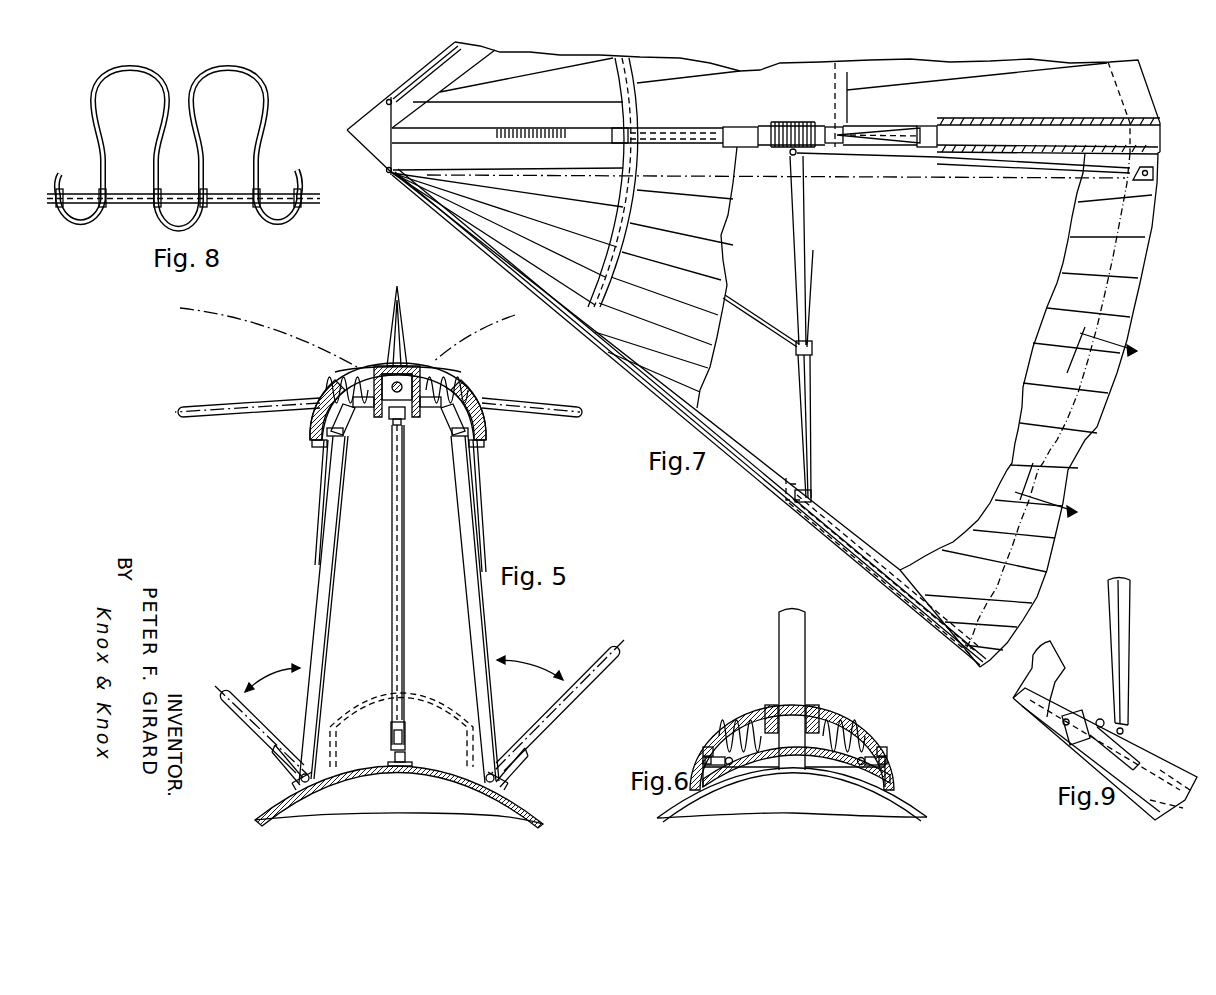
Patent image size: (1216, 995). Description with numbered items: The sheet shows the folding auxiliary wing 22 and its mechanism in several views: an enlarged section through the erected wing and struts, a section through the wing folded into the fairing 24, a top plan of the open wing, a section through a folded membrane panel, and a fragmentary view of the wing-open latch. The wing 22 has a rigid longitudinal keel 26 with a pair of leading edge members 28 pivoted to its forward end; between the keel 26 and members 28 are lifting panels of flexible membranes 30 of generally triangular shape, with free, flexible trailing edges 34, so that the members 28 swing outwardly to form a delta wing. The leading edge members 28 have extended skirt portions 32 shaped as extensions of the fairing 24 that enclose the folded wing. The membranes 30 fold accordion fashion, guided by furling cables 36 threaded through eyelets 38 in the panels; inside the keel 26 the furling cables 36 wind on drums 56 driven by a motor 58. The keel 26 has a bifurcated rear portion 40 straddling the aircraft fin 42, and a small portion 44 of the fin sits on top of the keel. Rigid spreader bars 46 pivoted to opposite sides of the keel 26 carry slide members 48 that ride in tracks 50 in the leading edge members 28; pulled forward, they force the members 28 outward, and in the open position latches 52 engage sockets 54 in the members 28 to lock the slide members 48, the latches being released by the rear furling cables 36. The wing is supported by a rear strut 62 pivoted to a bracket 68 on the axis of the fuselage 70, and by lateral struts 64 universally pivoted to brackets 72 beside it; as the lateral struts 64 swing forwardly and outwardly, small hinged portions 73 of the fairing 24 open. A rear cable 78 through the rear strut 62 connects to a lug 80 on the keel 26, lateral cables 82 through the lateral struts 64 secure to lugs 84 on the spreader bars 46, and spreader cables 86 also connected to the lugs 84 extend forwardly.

In FIG. 7, the wing 22 is at (450, 234).
In FIG. 6, the fairing 24 is at (895, 782).
In FIG. 7, the keel 26 is at (787, 126).
In FIG. 5, the keel 26 is at (410, 368).
In FIG. 7, the leading edge members 28 is at (440, 60).
In FIG. 5, the leading edge members 28 is at (310, 420).
In FIG. 6, the leading edge members 28 is at (722, 722).
In FIG. 7, the membranes 30 is at (903, 73).
In FIG. 5, the membranes 30 is at (466, 392).
In FIG. 6, the membranes 30 is at (850, 717).
In FIG. 8, the membranes 30 is at (268, 95).
In FIG. 7, the skirt portions 32 is at (418, 100).
In FIG. 5, the skirt portions 32 is at (368, 370).
In FIG. 6, the skirt portions 32 is at (750, 712).
In FIG. 7, the trailing edges 34 is at (1085, 433).
In FIG. 7, the furling cables 36 is at (612, 74).
In FIG. 9, the furling cables 36 is at (1150, 765).
In FIG. 8, the furling cables 36 is at (220, 193).
In FIG. 8, the eyelets 38 is at (100, 192).
In FIG. 7, the bifurcated rear portion 40 is at (1018, 118).
In FIG. 6, the fin 42 is at (779, 620).
In FIG. 7, the small portion of the fin 44 is at (897, 128).
In FIG. 5, the small portion of the fin 44 is at (392, 303).
In FIG. 7, the spreader bars 46 is at (1062, 170).
In FIG. 5, the spreader bars 46 is at (338, 412).
In FIG. 6, the spreader bars 46 is at (731, 768).
In FIG. 9, the spreader bars 46 is at (1125, 655).
In FIG. 7, the slide members 48 is at (1154, 174).
In FIG. 5, the slide members 48 is at (316, 446).
In FIG. 6, the slide members 48 is at (703, 760).
In FIG. 9, the slide members 48 is at (1115, 747).
In FIG. 7, the tracks 50 is at (845, 562).
In FIG. 6, the tracks 50 is at (705, 747).
In FIG. 9, the tracks 50 is at (1170, 805).
In FIG. 7, the latches 52 is at (793, 488).
In FIG. 9, the latches 52 is at (1078, 716).
In FIG. 9, the sockets 54 is at (1064, 718).
In FIG. 7, the drums 56 is at (613, 142).
In FIG. 7, the motor 58 is at (740, 125).
In FIG. 5, the rear strut 62 is at (404, 604).
In FIG. 5, the lateral struts 64 is at (324, 600).
In FIG. 5, the bracket 68 is at (393, 760).
In FIG. 5, the fuselage 70 is at (525, 815).
In FIG. 6, the fuselage 70 is at (920, 813).
In FIG. 5, the brackets 72 is at (315, 775).
In FIG. 5, the hinged portions 73 is at (297, 752).
In FIG. 5, the rear cable 78 is at (393, 424).
In FIG. 5, the lug 80 is at (405, 420).
In FIG. 7, the lateral cables 82 is at (815, 262).
In FIG. 7, the lugs 84 is at (815, 350).
In FIG. 5, the lugs 84 is at (340, 436).
In FIG. 7, the spreader cables 86 is at (780, 337).
In FIG. 5, the spreader cables 86 is at (320, 520).